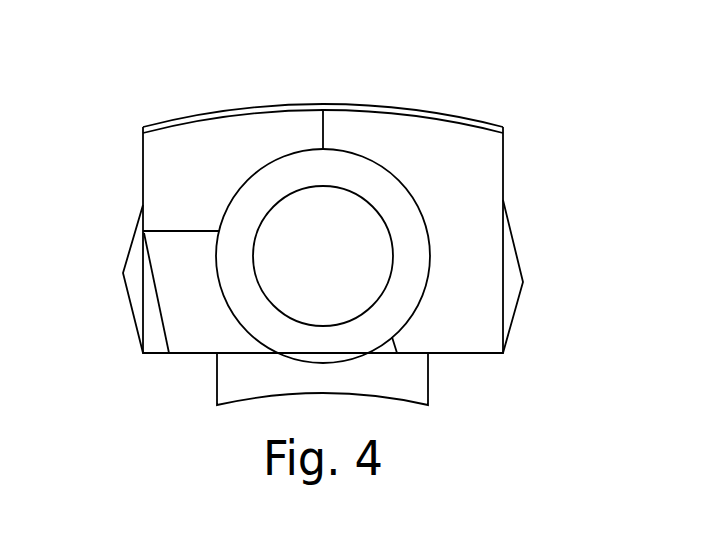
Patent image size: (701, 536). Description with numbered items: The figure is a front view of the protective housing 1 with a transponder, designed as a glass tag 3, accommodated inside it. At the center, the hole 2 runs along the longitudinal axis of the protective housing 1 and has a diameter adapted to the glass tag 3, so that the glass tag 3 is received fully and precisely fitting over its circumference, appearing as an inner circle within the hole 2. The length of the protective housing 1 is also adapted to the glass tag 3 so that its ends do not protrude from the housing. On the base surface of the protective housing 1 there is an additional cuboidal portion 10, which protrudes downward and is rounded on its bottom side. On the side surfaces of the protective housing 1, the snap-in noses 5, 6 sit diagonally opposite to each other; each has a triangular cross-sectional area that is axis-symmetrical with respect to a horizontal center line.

The protective housing 1 is at (422, 153).
The hole 2 is at (247, 177).
The glass tag 3 is at (379, 204).
The snap-in nose 5 is at (510, 295).
The snap-in nose 6 is at (130, 281).
The cuboidal portion 10 is at (418, 376).